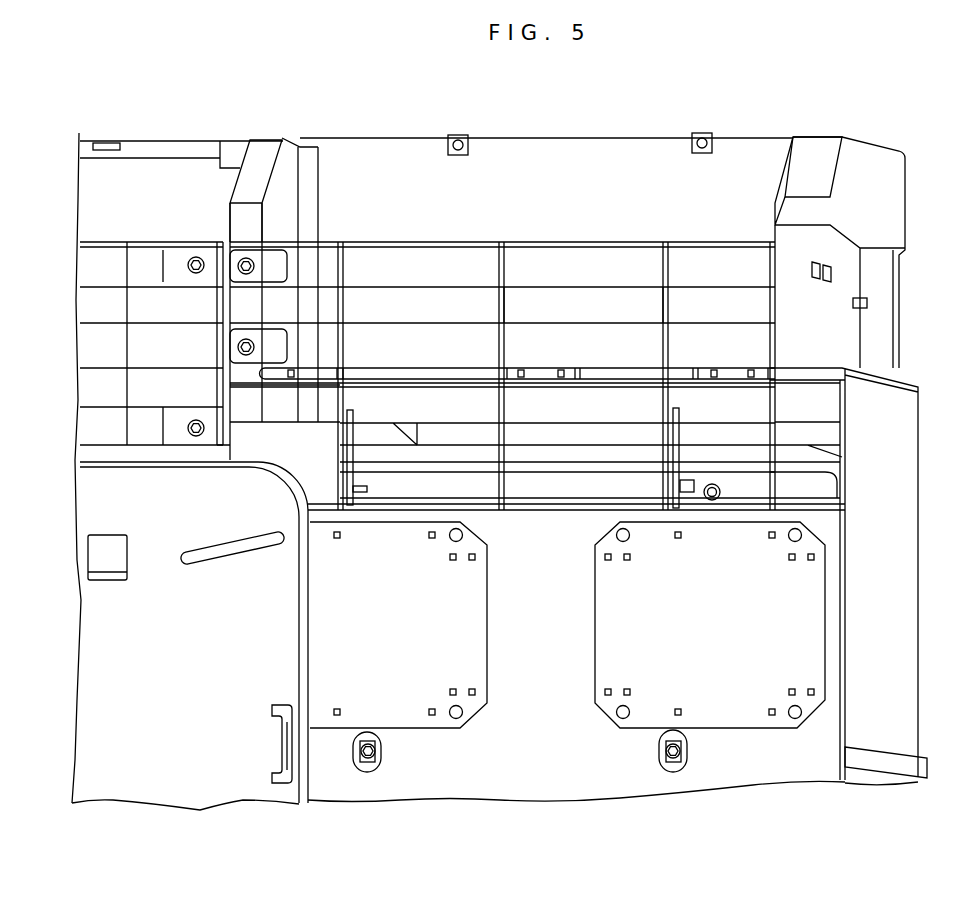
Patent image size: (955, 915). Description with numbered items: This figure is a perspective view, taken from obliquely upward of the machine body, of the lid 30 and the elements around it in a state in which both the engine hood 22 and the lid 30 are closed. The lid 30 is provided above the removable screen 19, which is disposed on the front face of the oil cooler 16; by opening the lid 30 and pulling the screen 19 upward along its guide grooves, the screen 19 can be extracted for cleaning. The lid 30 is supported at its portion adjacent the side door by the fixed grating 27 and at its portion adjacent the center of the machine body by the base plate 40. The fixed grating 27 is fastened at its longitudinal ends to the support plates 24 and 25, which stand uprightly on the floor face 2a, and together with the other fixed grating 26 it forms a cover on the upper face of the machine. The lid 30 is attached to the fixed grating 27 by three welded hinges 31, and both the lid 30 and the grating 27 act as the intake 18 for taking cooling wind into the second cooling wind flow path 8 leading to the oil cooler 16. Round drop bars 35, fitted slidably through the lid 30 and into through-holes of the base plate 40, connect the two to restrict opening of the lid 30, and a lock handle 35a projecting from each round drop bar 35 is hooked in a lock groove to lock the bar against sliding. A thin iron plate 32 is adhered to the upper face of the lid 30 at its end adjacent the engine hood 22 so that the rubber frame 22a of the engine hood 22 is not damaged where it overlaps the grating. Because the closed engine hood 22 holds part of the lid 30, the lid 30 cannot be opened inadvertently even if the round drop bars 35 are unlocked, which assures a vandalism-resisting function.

The floor face 2a is at (501, 147).
The second cooling wind flow path 8 is at (541, 309).
The oil cooler 16 is at (515, 454).
The intake 18 is at (605, 300).
The removable screen 19 is at (590, 445).
The engine hood 22 is at (237, 793).
The rubber frame 22a is at (102, 460).
The support plate 24 is at (820, 145).
The support plate 25 is at (262, 142).
The fixed grating 26 is at (145, 245).
The fixed grating 27 is at (420, 242).
The lid 30 is at (793, 377).
The hinges 31 is at (318, 370).
The thin iron plate 32 is at (232, 445).
The round drop bars 35 is at (353, 432).
The lock handle 35a is at (363, 493).
The base plate 40 is at (575, 787).